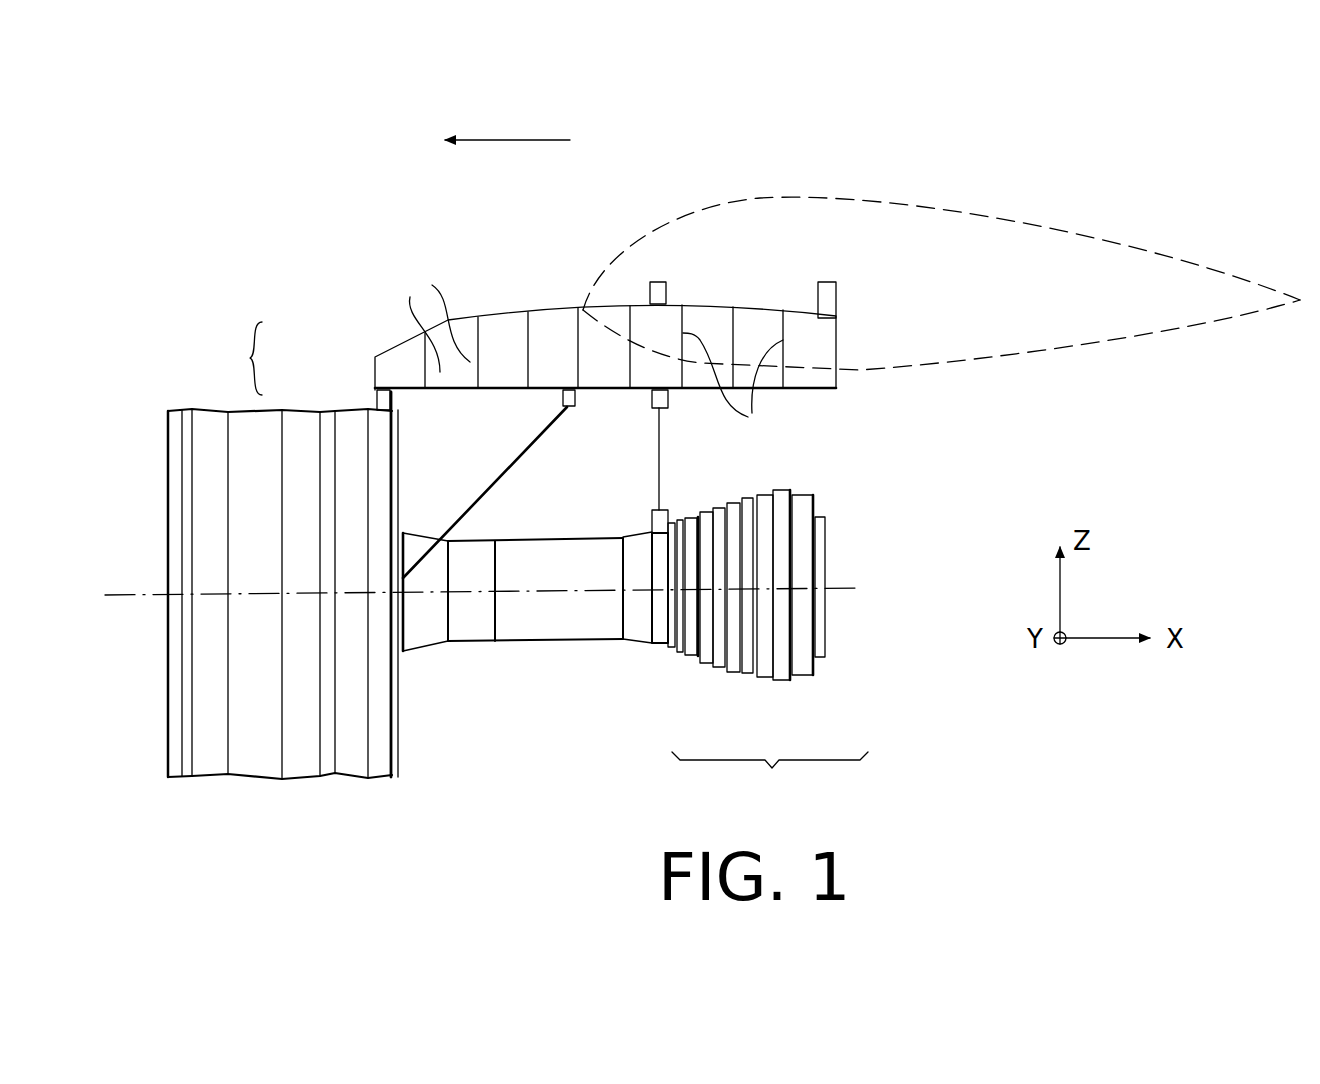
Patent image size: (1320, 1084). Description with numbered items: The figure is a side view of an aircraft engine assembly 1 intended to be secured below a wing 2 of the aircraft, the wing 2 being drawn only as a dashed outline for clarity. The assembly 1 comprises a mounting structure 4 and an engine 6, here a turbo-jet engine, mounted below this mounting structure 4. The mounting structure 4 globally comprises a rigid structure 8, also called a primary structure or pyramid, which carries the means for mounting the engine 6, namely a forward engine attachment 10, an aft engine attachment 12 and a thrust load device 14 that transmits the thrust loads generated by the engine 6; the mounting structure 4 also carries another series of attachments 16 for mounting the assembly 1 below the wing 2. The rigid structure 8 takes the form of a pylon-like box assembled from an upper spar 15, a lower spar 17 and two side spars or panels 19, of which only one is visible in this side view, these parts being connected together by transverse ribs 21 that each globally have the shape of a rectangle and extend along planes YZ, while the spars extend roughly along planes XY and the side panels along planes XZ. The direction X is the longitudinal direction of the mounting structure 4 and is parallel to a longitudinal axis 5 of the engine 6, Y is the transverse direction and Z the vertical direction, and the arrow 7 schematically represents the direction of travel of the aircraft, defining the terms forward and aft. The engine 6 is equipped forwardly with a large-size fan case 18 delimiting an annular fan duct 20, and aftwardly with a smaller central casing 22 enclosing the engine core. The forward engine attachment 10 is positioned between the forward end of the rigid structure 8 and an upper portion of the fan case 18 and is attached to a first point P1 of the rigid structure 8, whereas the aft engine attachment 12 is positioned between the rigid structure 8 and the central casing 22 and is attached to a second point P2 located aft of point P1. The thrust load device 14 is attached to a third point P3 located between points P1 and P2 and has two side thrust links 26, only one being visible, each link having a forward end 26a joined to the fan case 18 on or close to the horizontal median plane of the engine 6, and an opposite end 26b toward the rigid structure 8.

The aircraft engine assembly 1 is at (226, 254).
The wing 2 is at (1058, 238).
The mounting structure 4 is at (546, 564).
The longitudinal axis 5 is at (118, 594).
The engine 6 is at (382, 784).
The arrow 7 is at (512, 140).
The rigid structure 8 is at (824, 398).
The forward engine attachment 10 is at (364, 401).
The aft engine attachment 12 is at (680, 505).
The thrust load device 14 is at (576, 425).
The upper spar 15 is at (740, 305).
The attachments 16 is at (826, 280).
The lower spar 17 is at (603, 388).
The fan case 18 is at (223, 760).
The side spars/panels 19 is at (445, 375).
The annular fan duct 20 is at (362, 466).
The transverse ribs 21 is at (590, 356).
The central casing 22 is at (487, 641).
The side thrust links 26 is at (523, 458).
The forward end 26a is at (412, 535).
The strut rear end 26b is at (572, 422).
The first point P1 is at (372, 380).
The second point P2 is at (657, 387).
The third point P3 is at (580, 375).